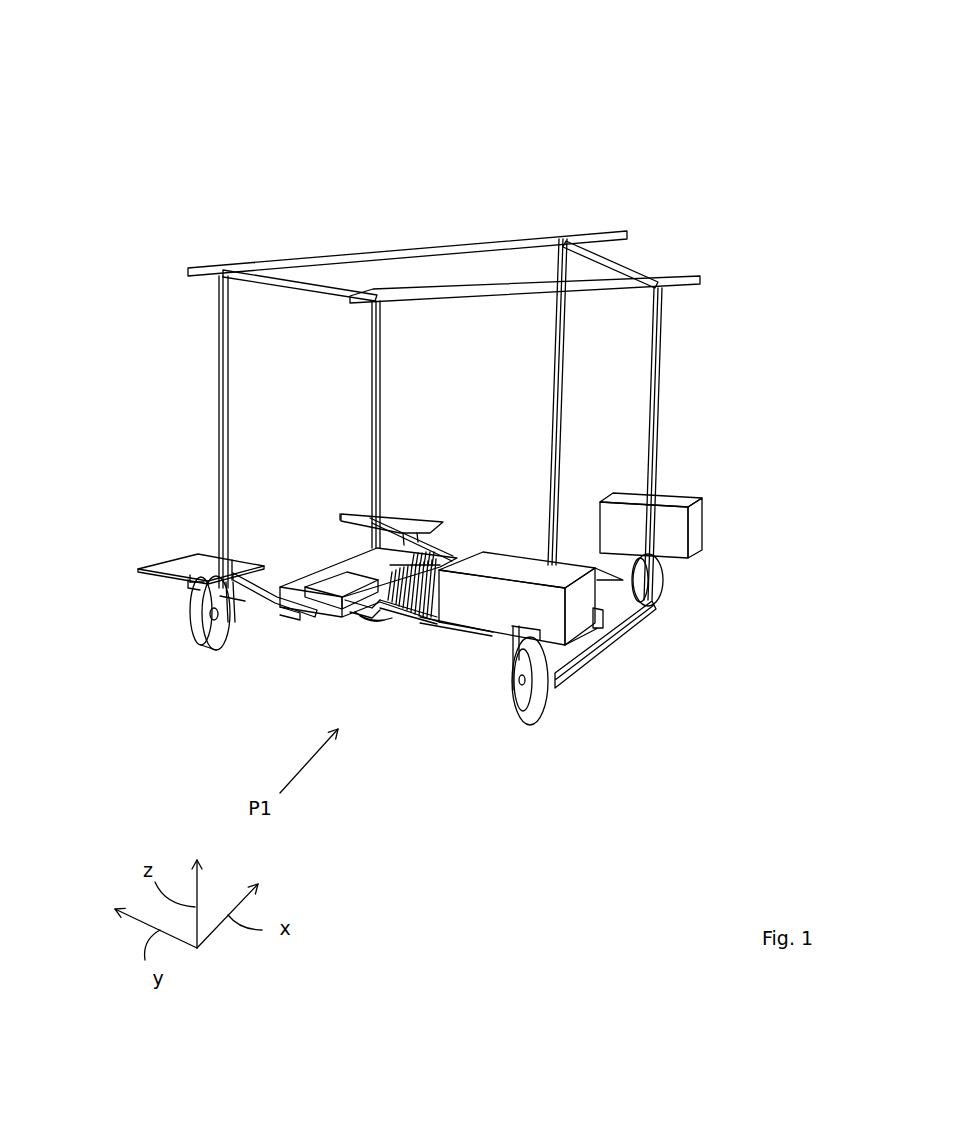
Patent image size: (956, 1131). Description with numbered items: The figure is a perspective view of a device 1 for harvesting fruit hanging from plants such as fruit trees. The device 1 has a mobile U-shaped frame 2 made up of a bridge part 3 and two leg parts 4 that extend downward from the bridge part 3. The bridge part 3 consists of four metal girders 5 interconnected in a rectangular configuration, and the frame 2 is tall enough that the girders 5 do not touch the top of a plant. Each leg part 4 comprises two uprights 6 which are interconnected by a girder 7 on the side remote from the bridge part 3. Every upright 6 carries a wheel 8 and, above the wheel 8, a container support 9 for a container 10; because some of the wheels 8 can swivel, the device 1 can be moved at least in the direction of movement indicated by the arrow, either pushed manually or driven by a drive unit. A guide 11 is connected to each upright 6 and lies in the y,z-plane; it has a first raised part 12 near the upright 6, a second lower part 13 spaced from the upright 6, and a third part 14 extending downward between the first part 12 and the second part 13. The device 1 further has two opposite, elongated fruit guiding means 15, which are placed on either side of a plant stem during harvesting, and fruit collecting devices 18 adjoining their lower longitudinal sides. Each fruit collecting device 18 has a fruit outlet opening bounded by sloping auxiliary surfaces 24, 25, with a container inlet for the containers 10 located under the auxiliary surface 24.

The device 1 is at (725, 112).
The frame 2 is at (423, 232).
The bridge part 3 is at (640, 252).
The leg parts 4 is at (200, 422).
The metal girders 5 is at (298, 283).
The uprights 6 is at (375, 392).
The girder 7 is at (252, 613).
The wheel 8 is at (200, 642).
The container support 9 is at (185, 568).
The container 10 is at (695, 523).
The guide 11 is at (335, 505).
The first raised part 12 is at (358, 513).
The second lower part 13 is at (290, 615).
The third part 14 is at (412, 543).
The fruit guiding means 15 is at (365, 632).
The fruit collecting device 18 is at (328, 553).
The auxiliary surface 24 is at (303, 572).
The auxiliary surface 25 is at (443, 562).